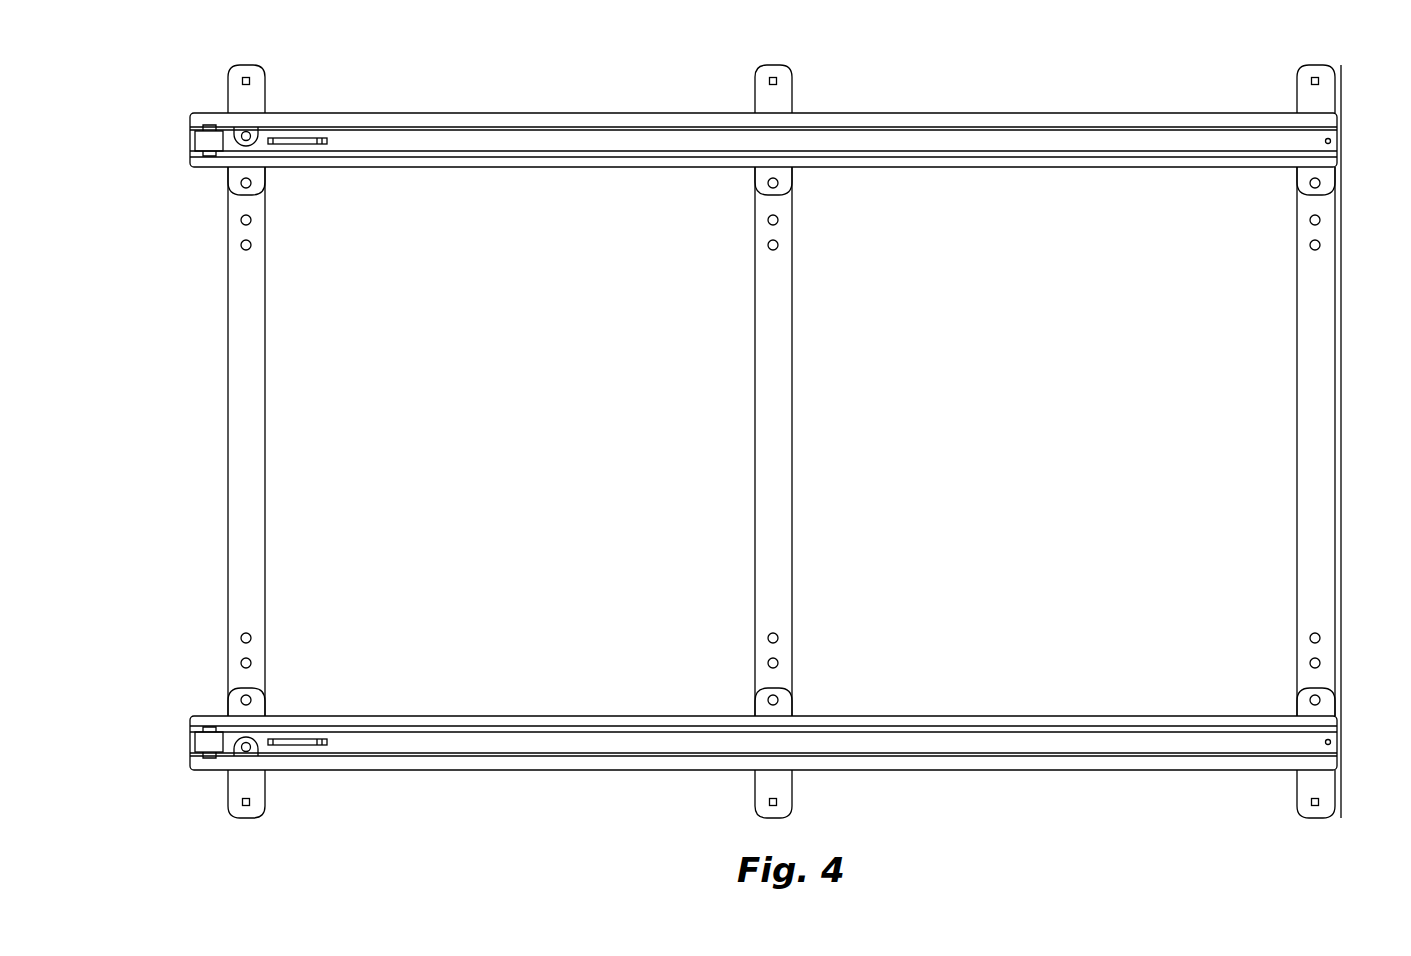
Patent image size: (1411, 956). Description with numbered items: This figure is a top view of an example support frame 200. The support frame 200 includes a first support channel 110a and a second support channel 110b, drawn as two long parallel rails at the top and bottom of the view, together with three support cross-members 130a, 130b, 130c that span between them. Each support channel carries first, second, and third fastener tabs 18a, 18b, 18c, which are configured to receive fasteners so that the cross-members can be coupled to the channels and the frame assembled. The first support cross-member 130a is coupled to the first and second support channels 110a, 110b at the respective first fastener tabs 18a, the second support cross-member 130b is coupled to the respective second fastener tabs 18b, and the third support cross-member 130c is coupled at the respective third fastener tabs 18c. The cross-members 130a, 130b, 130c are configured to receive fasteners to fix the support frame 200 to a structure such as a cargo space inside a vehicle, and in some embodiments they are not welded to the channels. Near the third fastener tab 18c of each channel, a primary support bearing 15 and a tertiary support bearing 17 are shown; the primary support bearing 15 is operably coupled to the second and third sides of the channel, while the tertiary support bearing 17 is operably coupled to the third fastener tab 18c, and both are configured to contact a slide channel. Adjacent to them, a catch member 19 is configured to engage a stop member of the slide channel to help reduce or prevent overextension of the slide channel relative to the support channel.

The support frame 200 is at (160, 48).
The first support channel 110a is at (1116, 88).
The second support channel 110b is at (1116, 796).
The first support cross-member 130a is at (1307, 432).
The second support cross-member 130b is at (763, 432).
The third support cross-member 130c is at (237, 432).
The first fastener tab 18a is at (1323, 74).
The second fastener tab 18b is at (783, 72).
The third fastener tab 18c is at (256, 72).
The primary support bearing 15 is at (197, 140).
The tertiary support bearing 17 is at (250, 130).
The catch member 19 is at (312, 136).